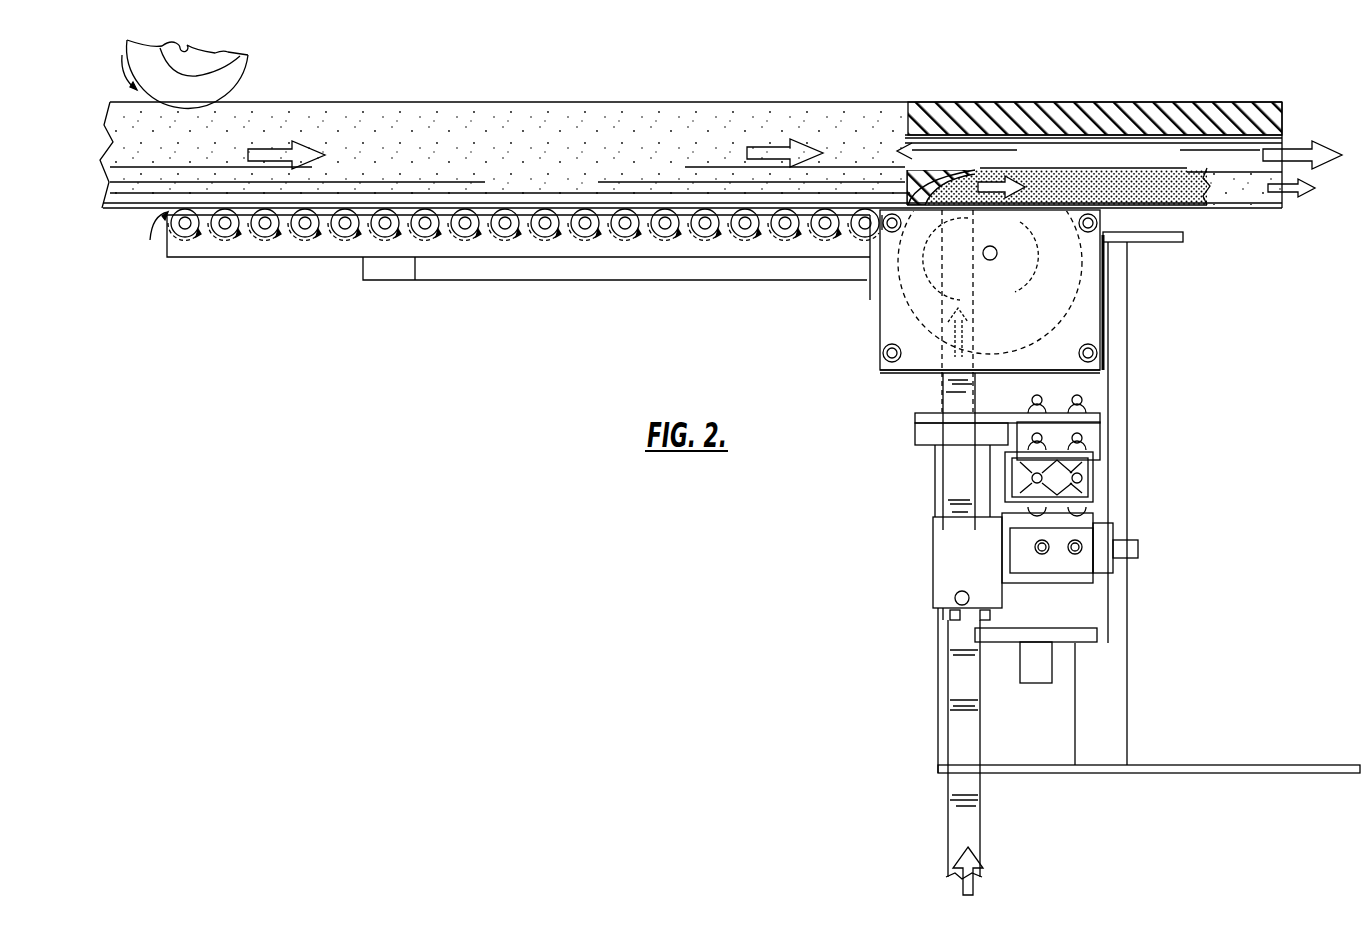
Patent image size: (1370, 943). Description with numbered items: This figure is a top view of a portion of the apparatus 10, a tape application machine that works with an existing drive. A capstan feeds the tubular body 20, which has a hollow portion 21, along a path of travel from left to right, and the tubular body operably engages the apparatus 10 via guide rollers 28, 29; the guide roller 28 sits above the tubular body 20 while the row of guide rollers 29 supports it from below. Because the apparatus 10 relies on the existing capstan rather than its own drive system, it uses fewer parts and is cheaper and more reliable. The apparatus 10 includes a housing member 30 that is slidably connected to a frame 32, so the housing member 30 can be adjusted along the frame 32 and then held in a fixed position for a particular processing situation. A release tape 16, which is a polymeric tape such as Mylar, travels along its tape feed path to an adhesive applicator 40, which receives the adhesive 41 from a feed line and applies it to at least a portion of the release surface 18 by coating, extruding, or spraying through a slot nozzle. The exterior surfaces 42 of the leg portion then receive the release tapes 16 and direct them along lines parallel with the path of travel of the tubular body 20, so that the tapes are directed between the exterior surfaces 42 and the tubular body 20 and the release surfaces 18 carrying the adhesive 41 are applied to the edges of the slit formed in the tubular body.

The apparatus 10 is at (1284, 412).
The release tapes 16 is at (960, 512).
The release surfaces 18 is at (1240, 195).
The tubular body 20 is at (610, 130).
The hollow portion 21 is at (1118, 150).
The guide roller 28 is at (227, 66).
The guide rollers 29 is at (226, 232).
The housing member 30 is at (1113, 283).
The frame 32 is at (1113, 660).
The adhesive applicator 40 is at (958, 565).
The adhesive 41 is at (1175, 175).
The exterior surfaces 42 is at (1052, 170).